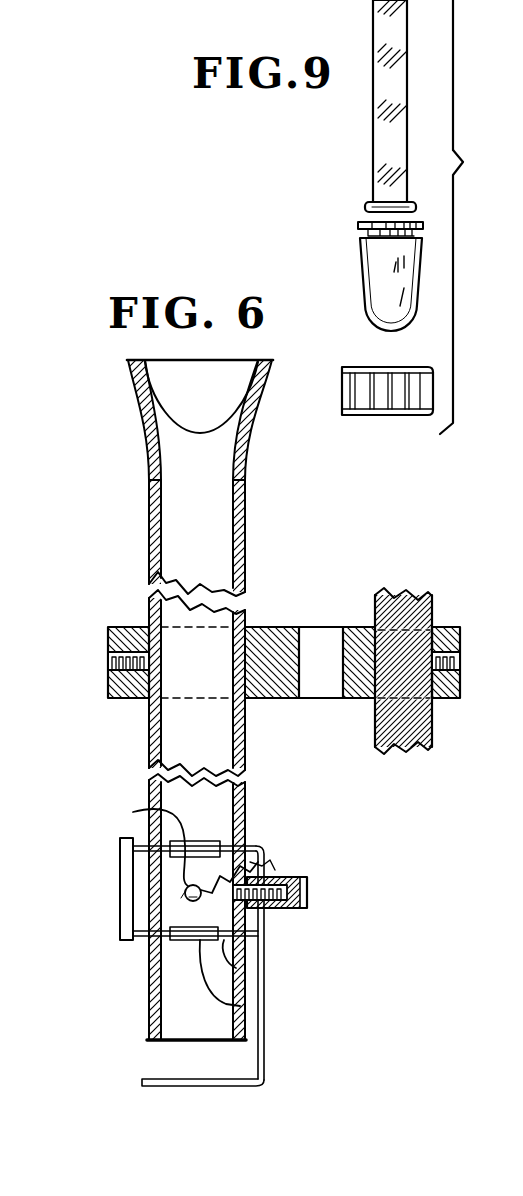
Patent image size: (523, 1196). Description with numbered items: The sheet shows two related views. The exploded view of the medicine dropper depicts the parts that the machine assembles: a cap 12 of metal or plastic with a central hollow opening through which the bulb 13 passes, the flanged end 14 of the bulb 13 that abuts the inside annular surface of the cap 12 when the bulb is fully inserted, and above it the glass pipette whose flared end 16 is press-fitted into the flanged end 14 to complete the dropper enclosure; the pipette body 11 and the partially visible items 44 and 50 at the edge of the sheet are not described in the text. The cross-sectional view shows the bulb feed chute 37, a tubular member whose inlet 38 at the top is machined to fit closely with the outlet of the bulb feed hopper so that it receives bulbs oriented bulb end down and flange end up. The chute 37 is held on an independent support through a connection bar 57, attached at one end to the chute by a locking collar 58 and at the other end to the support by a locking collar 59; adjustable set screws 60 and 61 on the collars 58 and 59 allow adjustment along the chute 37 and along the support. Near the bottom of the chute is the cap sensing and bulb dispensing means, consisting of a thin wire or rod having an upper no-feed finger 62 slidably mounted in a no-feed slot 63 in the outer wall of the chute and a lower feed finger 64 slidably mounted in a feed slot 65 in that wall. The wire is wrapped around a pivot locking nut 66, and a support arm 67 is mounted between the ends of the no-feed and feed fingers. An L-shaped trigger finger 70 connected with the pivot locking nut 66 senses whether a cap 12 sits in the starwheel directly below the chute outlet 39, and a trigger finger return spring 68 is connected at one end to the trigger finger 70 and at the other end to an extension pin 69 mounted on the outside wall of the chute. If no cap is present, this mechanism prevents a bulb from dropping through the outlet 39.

In FIG. 9, the tube 11 is at (373, 36).
In FIG. 9, the flared end 16 is at (364, 207).
In FIG. 9, the flanged end 14 is at (358, 226).
In FIG. 9, the bulb 13 is at (361, 287).
In FIG. 9, the cap 12 is at (350, 410).
In FIG. 9, the housing wall 44 is at (488, 75).
In FIG. 9, the housing notch 50 is at (481, 286).
In FIG. 6, the inlet 38 is at (180, 380).
In FIG. 6, the bulb feed chute 37 is at (247, 521).
In FIG. 6, the locking collar 58 is at (118, 699).
In FIG. 6, the adjustable set screw 60 is at (108, 661).
In FIG. 6, the connection bar 57 is at (318, 700).
In FIG. 6, the locking collar 59 is at (453, 700).
In FIG. 6, the adjustable set screw 61 is at (460, 660).
In FIG. 6, the support arm 67 is at (120, 916).
In FIG. 6, the no-feed finger 62 is at (255, 843).
In FIG. 6, the trigger finger 70 is at (257, 1086).
In FIG. 6, the pivot locking nut 66 is at (307, 893).
In FIG. 6, the trigger finger return spring 68 is at (266, 864).
In FIG. 6, the extension pin 69 is at (152, 851).
In FIG. 6, the no-feed slot 63 is at (232, 834).
In FIG. 6, the feed finger 64 is at (236, 968).
In FIG. 6, the feed slot 65 is at (240, 1006).
In FIG. 6, the chute outlet 39 is at (176, 1043).